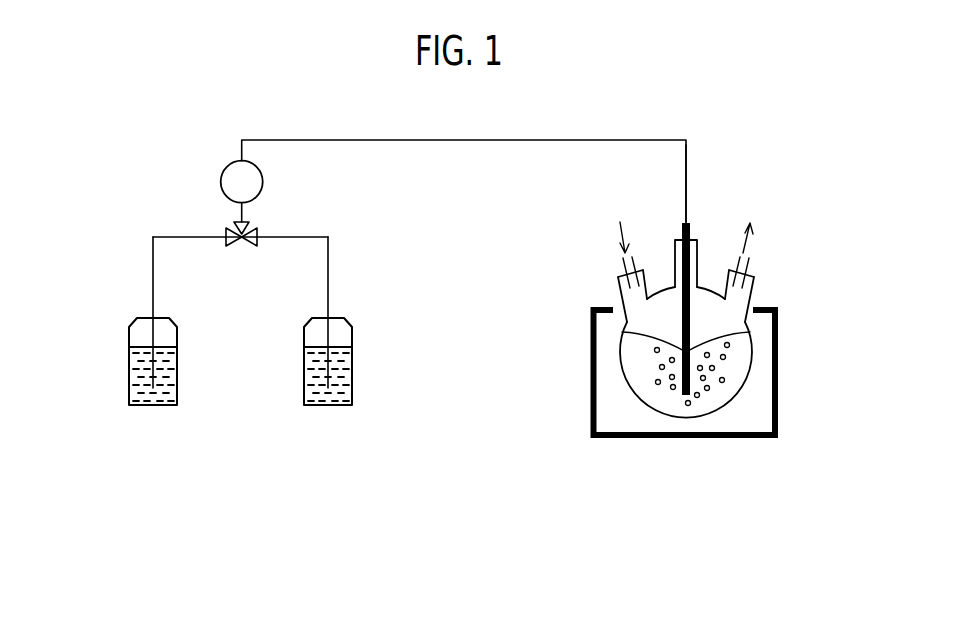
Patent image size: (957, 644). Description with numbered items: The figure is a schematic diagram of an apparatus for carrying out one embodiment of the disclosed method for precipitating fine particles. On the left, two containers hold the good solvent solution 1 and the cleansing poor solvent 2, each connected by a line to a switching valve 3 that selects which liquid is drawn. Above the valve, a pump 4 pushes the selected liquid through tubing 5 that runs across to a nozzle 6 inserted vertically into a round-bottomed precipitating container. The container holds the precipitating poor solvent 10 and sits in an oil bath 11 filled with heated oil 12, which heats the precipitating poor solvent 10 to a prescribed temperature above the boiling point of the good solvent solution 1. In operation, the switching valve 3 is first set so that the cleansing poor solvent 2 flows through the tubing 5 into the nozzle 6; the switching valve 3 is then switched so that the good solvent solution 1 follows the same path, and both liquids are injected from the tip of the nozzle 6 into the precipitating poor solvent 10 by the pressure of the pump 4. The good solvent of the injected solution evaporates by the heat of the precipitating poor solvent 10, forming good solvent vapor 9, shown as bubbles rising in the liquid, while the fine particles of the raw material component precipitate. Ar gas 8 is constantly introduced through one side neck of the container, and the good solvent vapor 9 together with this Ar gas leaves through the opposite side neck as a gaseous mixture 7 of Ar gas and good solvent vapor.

The good solvent solution 1 is at (130, 393).
The cleansing poor solvent 2 is at (350, 393).
The switching valve 3 is at (226, 236).
The pump 4 is at (225, 181).
The tubing 5 is at (686, 156).
The nozzle 6 is at (689, 225).
The gaseous mixture of Ar gas and good solvent vapor 7 is at (745, 248).
The Ar gas 8 is at (618, 232).
The good solvent vapor 9 is at (654, 352).
The precipitating poor solvent 10 is at (657, 400).
The oil bath 11 is at (779, 347).
The heated oil 12 is at (755, 407).